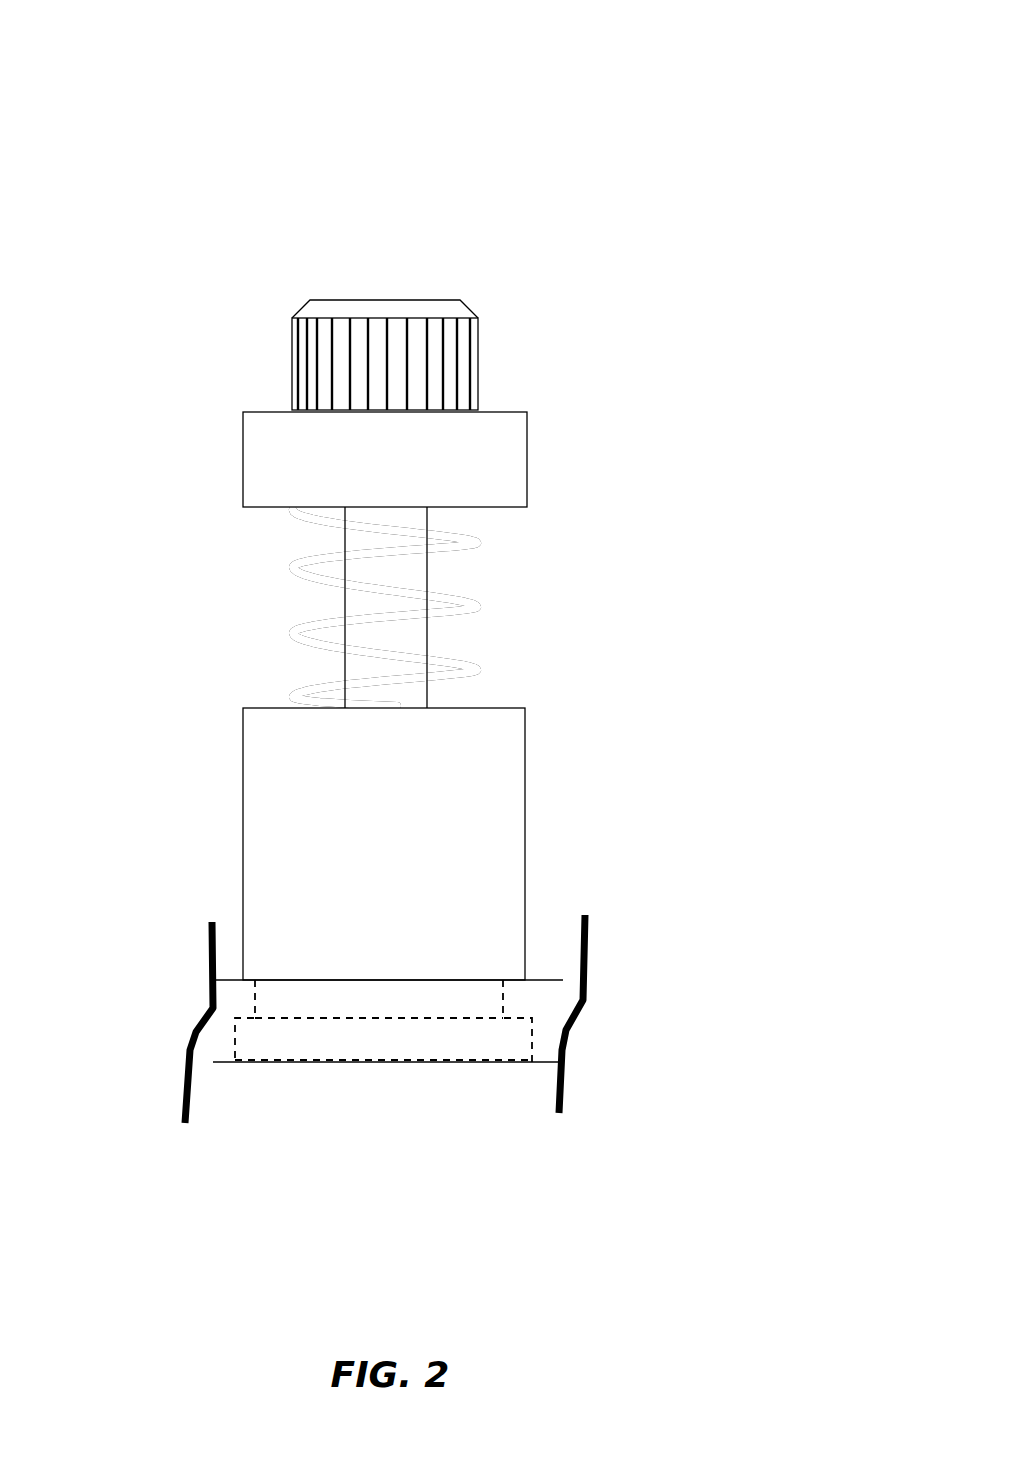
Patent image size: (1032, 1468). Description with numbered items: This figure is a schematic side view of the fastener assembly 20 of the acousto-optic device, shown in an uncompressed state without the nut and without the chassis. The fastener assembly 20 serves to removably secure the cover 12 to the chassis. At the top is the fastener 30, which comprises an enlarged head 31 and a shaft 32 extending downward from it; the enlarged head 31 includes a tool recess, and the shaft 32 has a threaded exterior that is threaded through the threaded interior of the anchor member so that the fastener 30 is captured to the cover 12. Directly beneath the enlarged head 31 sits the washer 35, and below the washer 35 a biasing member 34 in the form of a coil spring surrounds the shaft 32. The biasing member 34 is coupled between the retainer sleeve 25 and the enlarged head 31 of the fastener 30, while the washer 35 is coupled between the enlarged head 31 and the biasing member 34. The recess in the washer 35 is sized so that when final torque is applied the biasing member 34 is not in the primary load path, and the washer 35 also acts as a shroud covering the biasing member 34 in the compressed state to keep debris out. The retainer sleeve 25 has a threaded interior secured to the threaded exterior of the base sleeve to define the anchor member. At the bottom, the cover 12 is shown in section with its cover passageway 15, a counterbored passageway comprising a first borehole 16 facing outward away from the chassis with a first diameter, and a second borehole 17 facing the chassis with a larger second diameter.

The fastener assembly 20 is at (696, 156).
The fastener 30 is at (401, 286).
The enlarged head 31 is at (452, 360).
The washer 35 is at (277, 447).
The biasing member 34 is at (477, 543).
The shaft 32 is at (407, 628).
The retainer sleeve 25 is at (263, 827).
The cover 12 is at (547, 1020).
The second borehole 17 is at (258, 1047).
The first borehole 16 is at (405, 1003).
The cover passageway 15 is at (463, 1070).